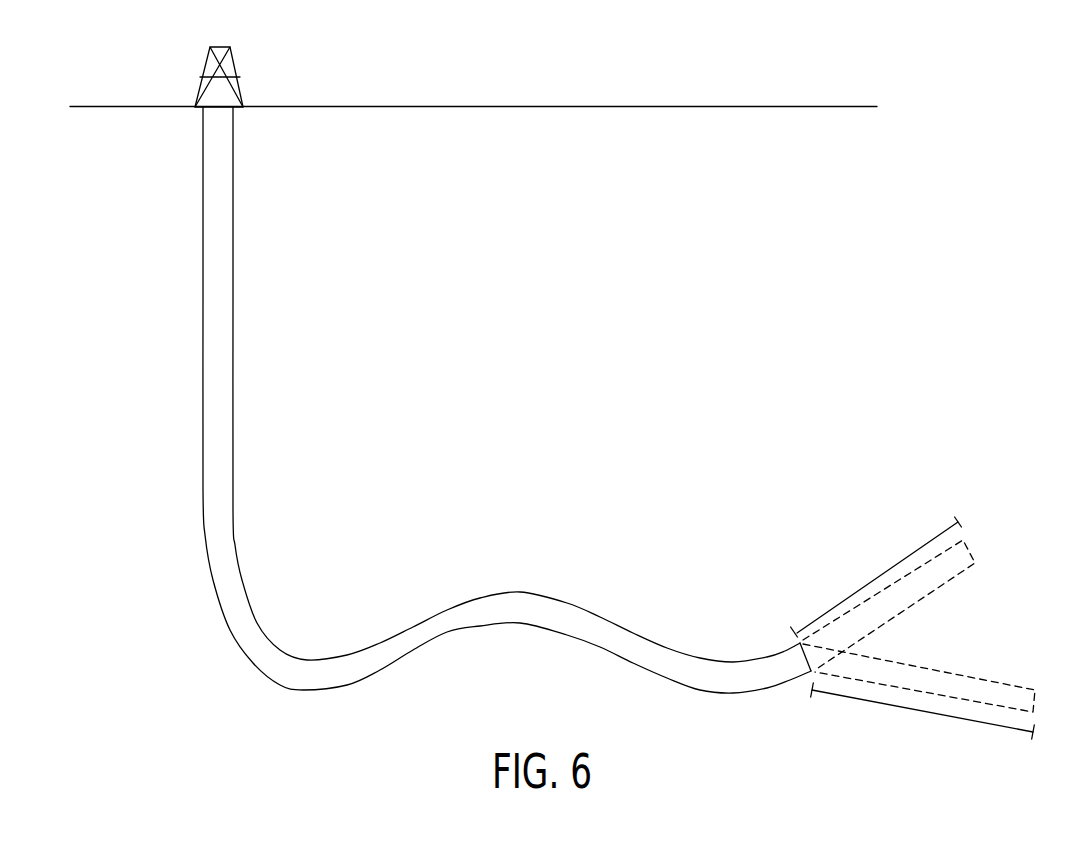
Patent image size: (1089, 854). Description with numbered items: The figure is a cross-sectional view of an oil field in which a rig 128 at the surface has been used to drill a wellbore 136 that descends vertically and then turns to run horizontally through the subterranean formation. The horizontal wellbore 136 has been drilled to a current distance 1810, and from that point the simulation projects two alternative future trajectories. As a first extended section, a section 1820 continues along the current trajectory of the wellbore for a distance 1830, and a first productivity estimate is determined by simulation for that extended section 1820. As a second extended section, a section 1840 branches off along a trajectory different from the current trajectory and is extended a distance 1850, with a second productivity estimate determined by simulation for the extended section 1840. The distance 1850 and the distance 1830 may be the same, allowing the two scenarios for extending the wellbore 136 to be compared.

The rig 128 is at (202, 73).
The wellbore 136 is at (233, 210).
The current distance 1810 is at (806, 667).
The first extended section 1820 is at (952, 582).
The distance of first extended section 1830 is at (877, 575).
The second extended section 1840 is at (1000, 683).
The distance of second extended section 1850 is at (920, 712).